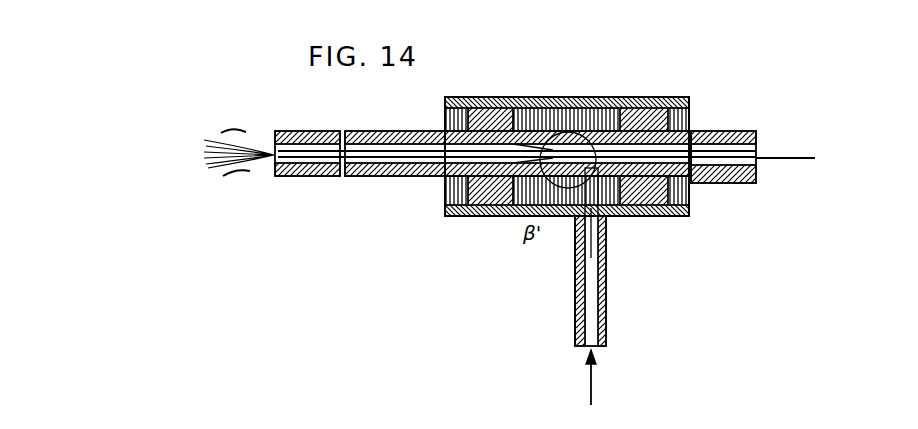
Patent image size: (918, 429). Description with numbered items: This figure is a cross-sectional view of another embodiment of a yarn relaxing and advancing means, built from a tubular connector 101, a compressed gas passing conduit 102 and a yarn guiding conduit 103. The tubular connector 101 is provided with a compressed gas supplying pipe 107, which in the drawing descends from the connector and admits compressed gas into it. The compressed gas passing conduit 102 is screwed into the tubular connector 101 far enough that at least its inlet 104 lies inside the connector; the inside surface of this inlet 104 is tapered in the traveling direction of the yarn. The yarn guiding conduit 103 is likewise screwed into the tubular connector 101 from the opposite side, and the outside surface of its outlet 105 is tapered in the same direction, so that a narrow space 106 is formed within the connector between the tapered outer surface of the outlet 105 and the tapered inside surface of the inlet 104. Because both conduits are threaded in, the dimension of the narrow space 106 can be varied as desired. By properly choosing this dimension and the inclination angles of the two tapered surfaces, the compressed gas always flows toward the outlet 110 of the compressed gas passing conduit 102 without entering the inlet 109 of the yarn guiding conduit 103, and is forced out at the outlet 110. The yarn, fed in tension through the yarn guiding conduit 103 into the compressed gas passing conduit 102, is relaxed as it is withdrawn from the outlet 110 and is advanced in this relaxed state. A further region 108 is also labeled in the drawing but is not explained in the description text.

The tubular connector 101 is at (484, 207).
The compressed gas passing conduit 102 is at (408, 170).
The yarn guiding conduit 103 is at (708, 172).
The inlet of the compressed gas passing conduit 104 is at (546, 70).
The outlet of the yarn guiding conduit 105 is at (577, 74).
The narrow space 106 is at (550, 212).
The compressed gas supplying pipe 107 is at (597, 277).
The passage 108 is at (598, 212).
The inlet of the yarn guiding conduit 109 is at (756, 121).
The outlet of the compressed gas passing conduit 110 is at (268, 155).